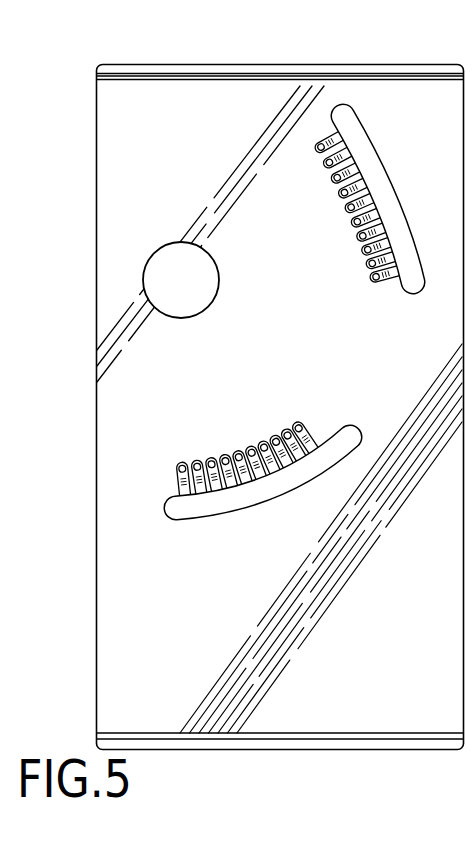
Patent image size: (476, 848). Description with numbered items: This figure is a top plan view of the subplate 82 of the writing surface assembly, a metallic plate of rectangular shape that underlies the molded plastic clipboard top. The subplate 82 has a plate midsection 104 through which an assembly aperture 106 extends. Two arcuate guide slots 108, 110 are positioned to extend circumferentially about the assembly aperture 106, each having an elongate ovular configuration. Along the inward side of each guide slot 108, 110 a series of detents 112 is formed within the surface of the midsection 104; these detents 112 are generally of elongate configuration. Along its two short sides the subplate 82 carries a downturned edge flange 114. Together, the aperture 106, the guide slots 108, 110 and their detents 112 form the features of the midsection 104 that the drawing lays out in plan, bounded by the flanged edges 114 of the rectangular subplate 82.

The subplate 82 is at (214, 50).
The plate midsection 104 is at (140, 159).
The assembly aperture 106 is at (165, 276).
The arcuate guide slot 108 is at (183, 508).
The arcuate guide slot 110 is at (346, 119).
The detents 112 is at (319, 137).
The downturned edge flange 114 is at (126, 74).